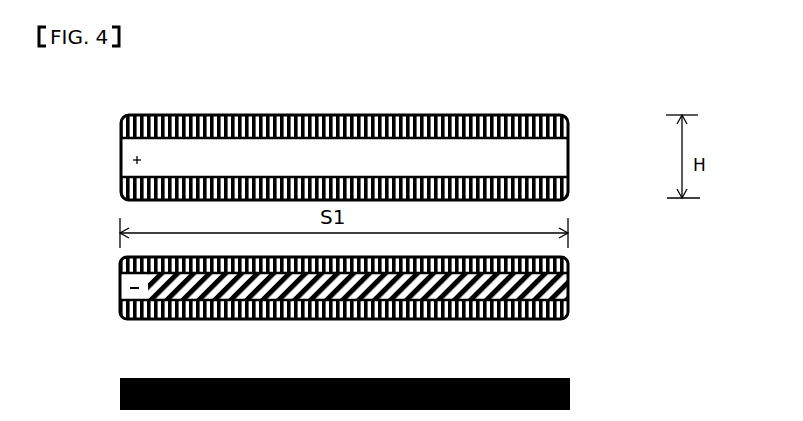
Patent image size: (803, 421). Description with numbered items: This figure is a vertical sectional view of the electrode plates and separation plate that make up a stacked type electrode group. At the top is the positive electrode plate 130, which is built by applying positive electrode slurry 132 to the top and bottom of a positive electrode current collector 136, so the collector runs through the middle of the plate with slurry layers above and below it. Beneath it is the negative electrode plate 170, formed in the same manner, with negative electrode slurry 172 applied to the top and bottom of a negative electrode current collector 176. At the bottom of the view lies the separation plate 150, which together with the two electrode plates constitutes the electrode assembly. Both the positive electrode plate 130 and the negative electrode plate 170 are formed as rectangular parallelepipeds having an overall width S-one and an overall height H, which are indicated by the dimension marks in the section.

The positive electrode plate 130 is at (343, 163).
The positive electrode slurry 132 is at (122, 122).
The positive electrode current collector 136 is at (128, 161).
The negative electrode plate 170 is at (343, 293).
The negative electrode slurry 172 is at (120, 272).
The negative electrode current collector 176 is at (120, 300).
The separation plate 150 is at (585, 395).